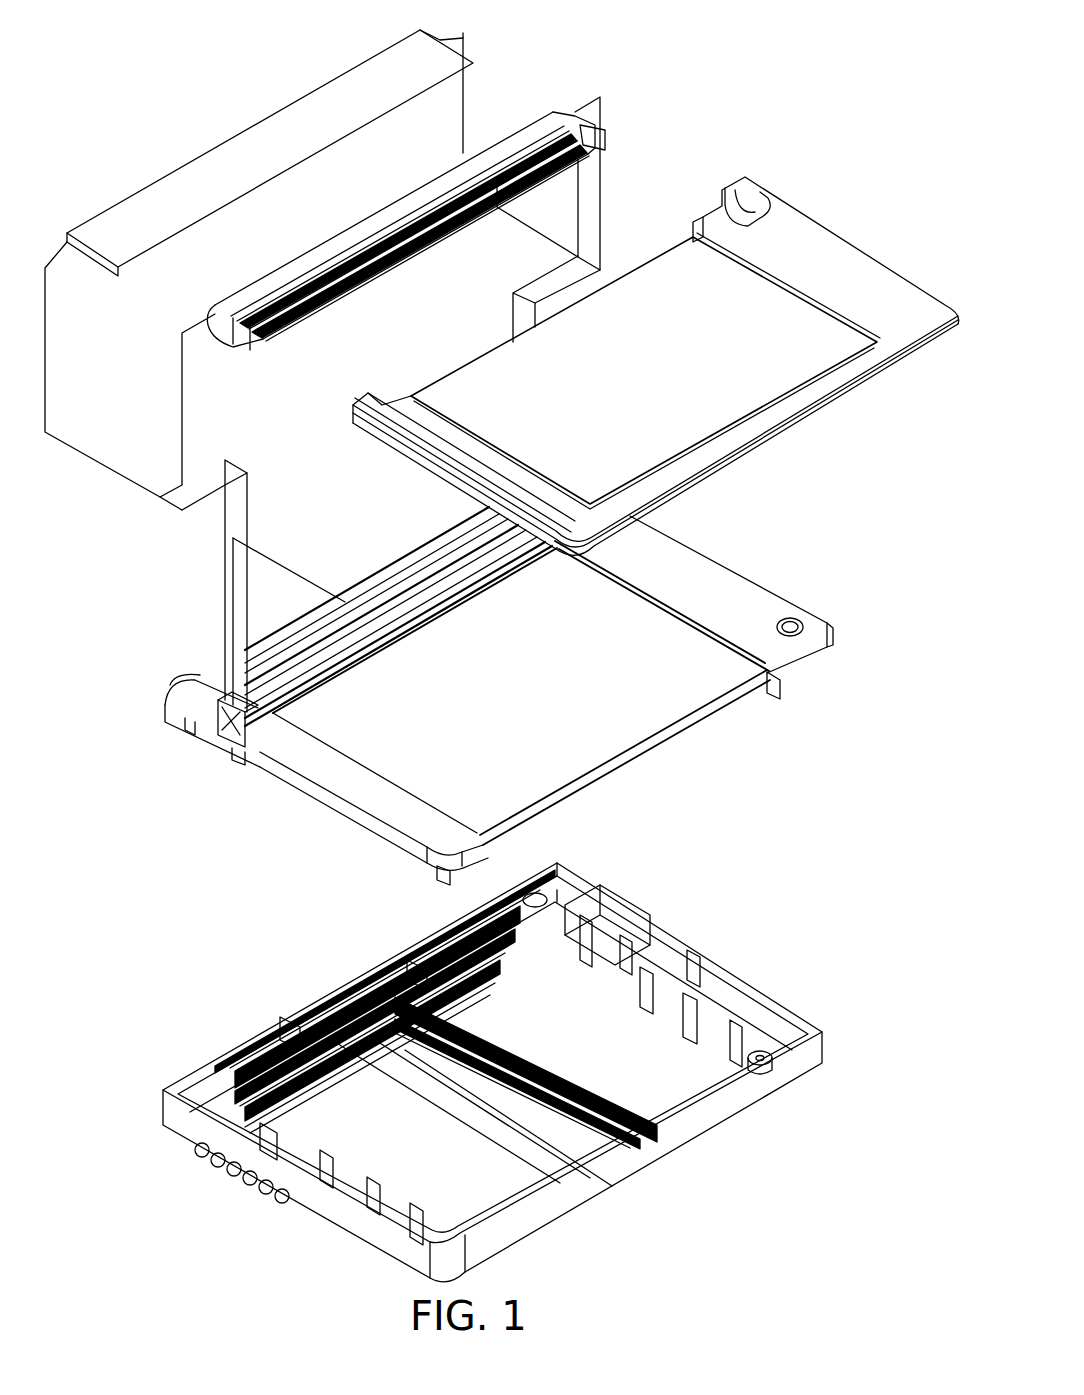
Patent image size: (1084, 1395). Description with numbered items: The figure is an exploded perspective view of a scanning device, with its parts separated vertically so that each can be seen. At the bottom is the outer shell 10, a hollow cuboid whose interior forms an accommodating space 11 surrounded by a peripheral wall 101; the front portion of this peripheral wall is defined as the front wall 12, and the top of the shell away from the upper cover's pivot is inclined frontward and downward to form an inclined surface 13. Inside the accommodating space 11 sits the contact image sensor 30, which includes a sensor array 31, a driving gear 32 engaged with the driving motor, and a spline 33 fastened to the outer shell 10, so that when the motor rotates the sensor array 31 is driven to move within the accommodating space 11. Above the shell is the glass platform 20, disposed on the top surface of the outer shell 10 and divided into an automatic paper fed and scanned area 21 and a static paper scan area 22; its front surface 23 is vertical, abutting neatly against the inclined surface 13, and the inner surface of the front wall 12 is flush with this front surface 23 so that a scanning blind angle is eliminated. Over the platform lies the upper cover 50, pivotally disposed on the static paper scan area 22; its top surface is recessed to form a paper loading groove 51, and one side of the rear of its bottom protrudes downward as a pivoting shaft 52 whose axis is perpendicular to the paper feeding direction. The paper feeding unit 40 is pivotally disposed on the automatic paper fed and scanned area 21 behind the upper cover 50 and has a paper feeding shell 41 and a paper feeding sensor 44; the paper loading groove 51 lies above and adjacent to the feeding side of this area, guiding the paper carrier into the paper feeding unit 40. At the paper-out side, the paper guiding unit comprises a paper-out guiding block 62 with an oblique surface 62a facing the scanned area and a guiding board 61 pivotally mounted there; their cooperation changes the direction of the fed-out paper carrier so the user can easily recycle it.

The outer shell 10 is at (539, 942).
The peripheral wall 101 is at (655, 915).
The accommodating space 11 is at (735, 995).
The front wall 12 is at (750, 1092).
The inclined surface 13 is at (762, 705).
The glass platform 20 is at (499, 693).
The automatic paper fed and scanned area 21 is at (440, 600).
The static paper scan area 22 is at (480, 665).
The front surface 23 is at (700, 730).
The contact image sensor 30 is at (385, 1001).
The sensor array 31 is at (290, 1022).
The driving gear 32 is at (427, 940).
The spline 33 is at (575, 1080).
The paper feeding unit 40 is at (406, 185).
The paper feeding shell 41 is at (320, 255).
The paper feeding sensor 44 is at (432, 232).
The upper cover 50 is at (610, 338).
The paper loading groove 51 is at (664, 280).
The pivoting shaft 52 is at (353, 430).
The guiding board 61 is at (332, 104).
The paper-out guiding block 62 is at (292, 592).
The oblique surface 62a is at (375, 648).